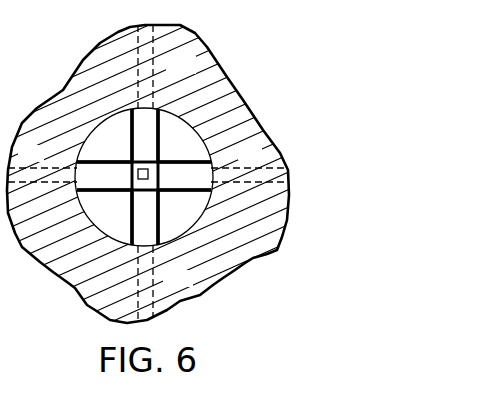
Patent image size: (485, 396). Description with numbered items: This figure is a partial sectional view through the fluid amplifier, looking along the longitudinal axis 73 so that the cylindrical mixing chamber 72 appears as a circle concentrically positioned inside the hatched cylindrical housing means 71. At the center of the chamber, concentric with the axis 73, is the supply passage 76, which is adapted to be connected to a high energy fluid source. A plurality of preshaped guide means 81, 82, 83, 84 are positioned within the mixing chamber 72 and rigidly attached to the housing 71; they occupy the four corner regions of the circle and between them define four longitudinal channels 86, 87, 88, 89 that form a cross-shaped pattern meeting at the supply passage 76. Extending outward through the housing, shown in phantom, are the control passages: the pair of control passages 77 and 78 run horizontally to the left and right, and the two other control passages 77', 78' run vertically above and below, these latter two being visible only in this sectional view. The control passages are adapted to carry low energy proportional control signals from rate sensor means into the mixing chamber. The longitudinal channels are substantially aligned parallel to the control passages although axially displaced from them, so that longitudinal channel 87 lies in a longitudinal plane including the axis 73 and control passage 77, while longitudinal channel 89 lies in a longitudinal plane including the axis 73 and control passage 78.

The cylindrical housing means 71 is at (288, 222).
The cylindrical mixing chamber 72 is at (135, 108).
The longitudinal axis 73 is at (134, 187).
The supply passage 76 is at (148, 175).
The control passage 77 is at (42, 163).
The control passage 77' is at (166, 66).
The control passage 78 is at (249, 162).
The control passage 78' is at (164, 283).
The preshaped guide means 81 is at (184, 216).
The preshaped guide means 82 is at (186, 150).
The preshaped guide means 83 is at (126, 145).
The preshaped guide means 84 is at (129, 230).
The longitudinal channel 86 is at (156, 136).
The longitudinal channel 87 is at (109, 186).
The longitudinal channel 88 is at (158, 210).
The longitudinal channel 89 is at (208, 186).